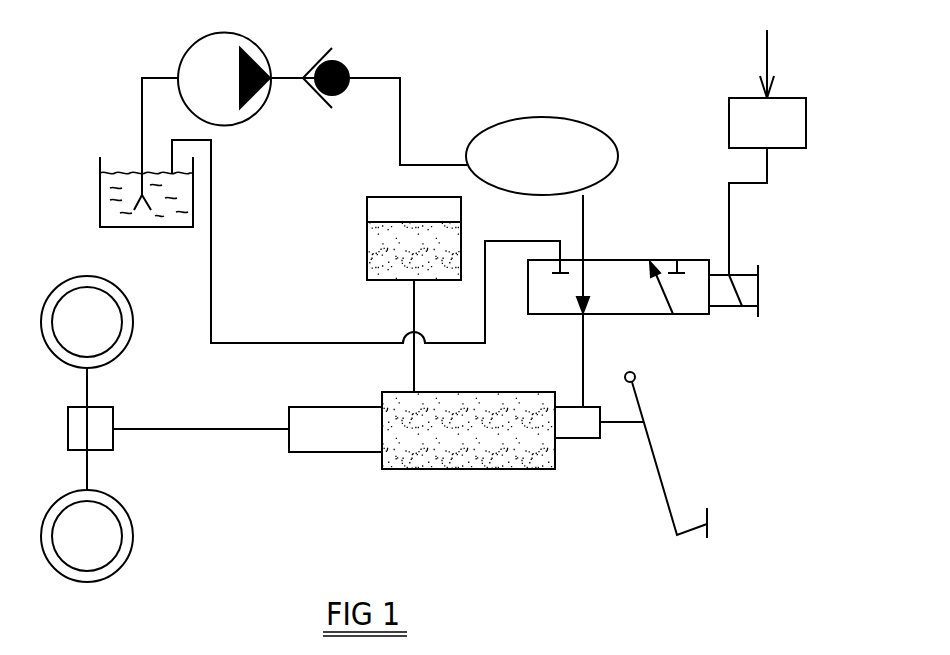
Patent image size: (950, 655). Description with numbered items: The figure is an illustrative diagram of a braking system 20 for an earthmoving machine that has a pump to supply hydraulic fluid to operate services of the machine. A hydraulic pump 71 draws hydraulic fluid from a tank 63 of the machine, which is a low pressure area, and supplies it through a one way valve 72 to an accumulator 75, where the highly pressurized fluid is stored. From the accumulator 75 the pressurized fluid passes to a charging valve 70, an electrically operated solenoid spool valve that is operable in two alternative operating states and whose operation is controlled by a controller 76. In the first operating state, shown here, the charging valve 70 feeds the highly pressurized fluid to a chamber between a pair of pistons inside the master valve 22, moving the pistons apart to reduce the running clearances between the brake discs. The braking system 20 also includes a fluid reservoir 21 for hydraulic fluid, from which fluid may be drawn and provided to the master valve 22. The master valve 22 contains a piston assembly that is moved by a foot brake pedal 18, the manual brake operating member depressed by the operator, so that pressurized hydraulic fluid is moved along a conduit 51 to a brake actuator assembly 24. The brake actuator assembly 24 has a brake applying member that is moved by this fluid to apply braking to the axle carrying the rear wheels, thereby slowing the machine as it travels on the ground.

The foot brake pedal 18 is at (657, 455).
The braking system 20 is at (484, 112).
The fluid reservoir 21 is at (382, 279).
The master valve 22 is at (543, 479).
The brake actuator assembly 24 is at (113, 438).
The conduit 51 is at (238, 430).
The tank 63 is at (112, 228).
The charging valve 70 is at (652, 314).
The hydraulic pump 71 is at (253, 115).
The one way valve 72 is at (343, 90).
The accumulator 75 is at (587, 136).
The controller 76 is at (806, 123).